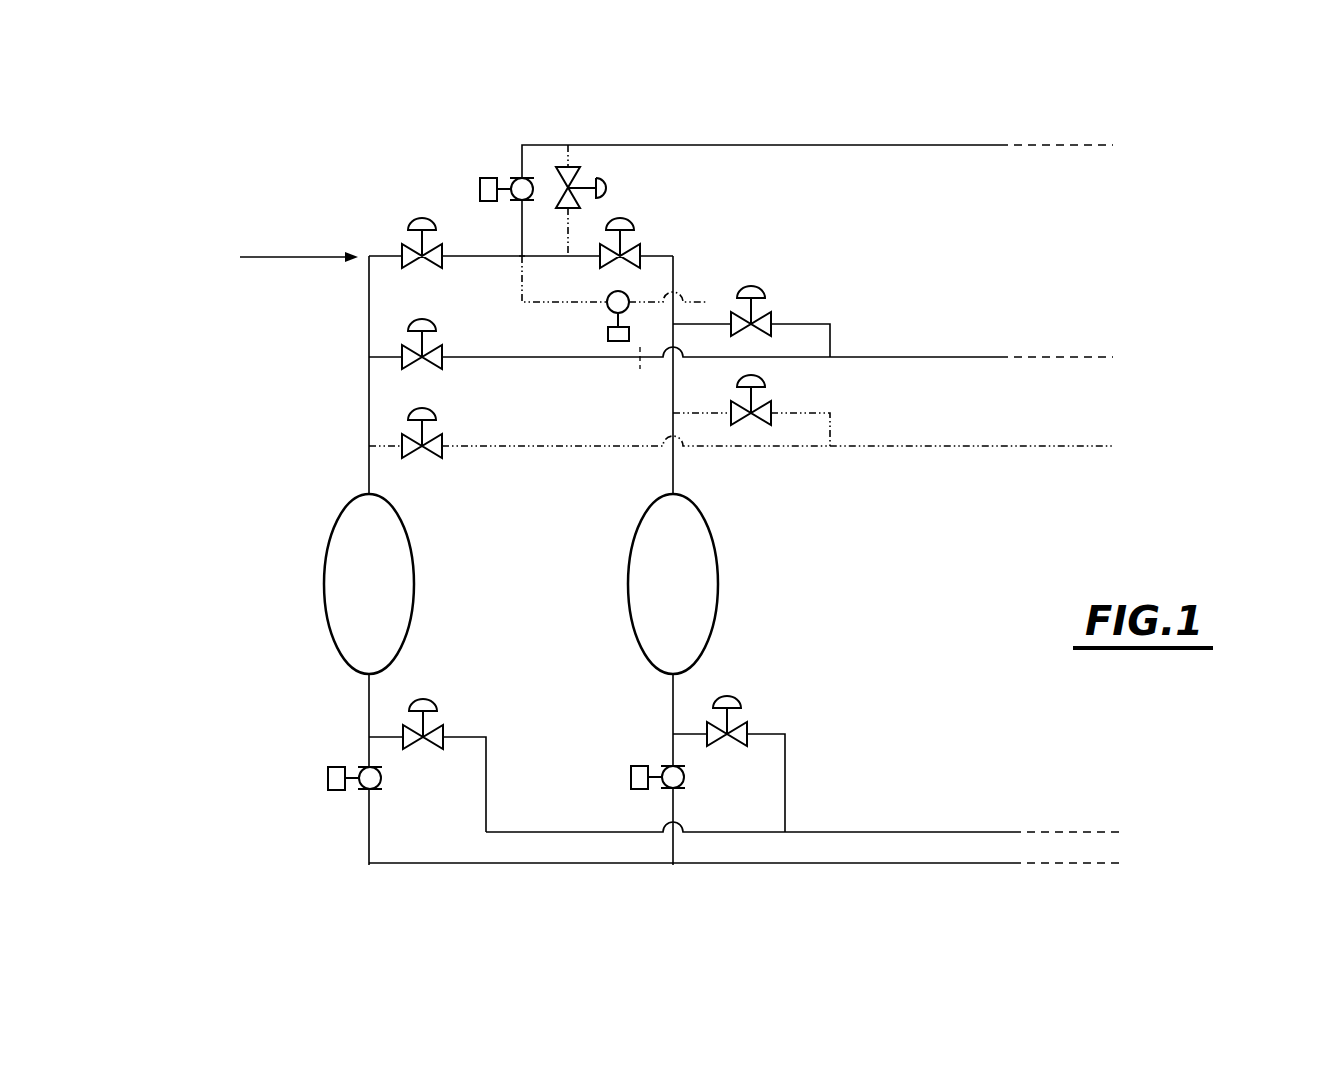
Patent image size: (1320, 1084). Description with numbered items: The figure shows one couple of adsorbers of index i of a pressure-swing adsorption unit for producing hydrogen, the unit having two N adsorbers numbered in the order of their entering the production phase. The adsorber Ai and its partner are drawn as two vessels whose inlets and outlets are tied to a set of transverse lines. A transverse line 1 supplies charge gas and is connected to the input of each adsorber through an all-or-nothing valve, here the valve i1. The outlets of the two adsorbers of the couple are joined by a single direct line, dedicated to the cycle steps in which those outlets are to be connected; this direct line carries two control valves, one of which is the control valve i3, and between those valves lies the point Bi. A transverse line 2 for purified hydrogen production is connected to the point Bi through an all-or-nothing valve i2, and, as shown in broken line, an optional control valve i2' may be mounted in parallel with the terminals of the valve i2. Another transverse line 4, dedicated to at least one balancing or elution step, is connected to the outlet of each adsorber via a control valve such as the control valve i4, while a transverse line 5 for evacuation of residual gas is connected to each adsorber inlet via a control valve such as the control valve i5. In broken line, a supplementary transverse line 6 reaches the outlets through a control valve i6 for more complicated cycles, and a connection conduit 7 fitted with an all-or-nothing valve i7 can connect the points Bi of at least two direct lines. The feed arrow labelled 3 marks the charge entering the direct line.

The transverse line for supply of charge gas 1 is at (832, 864).
The transverse line for purified hydrogen production 2 is at (866, 145).
The feed line 3 is at (286, 257).
The transverse line 4 is at (977, 357).
The transverse line for evacuation of residual gas 5 is at (937, 831).
The other transverse line 6 is at (920, 447).
The connection conduit 7 is at (518, 288).
The valve TOR i1 is at (335, 791).
The valve TOR i2 is at (466, 164).
The control valve i2' is at (627, 200).
The control valve i3 is at (410, 222).
The control valve i4 is at (410, 366).
The control valve i5 is at (425, 700).
The control valve i6 is at (410, 448).
The valve TOR i7 is at (608, 336).
The point Bi is at (524, 260).
The adsorber Ai is at (369, 584).